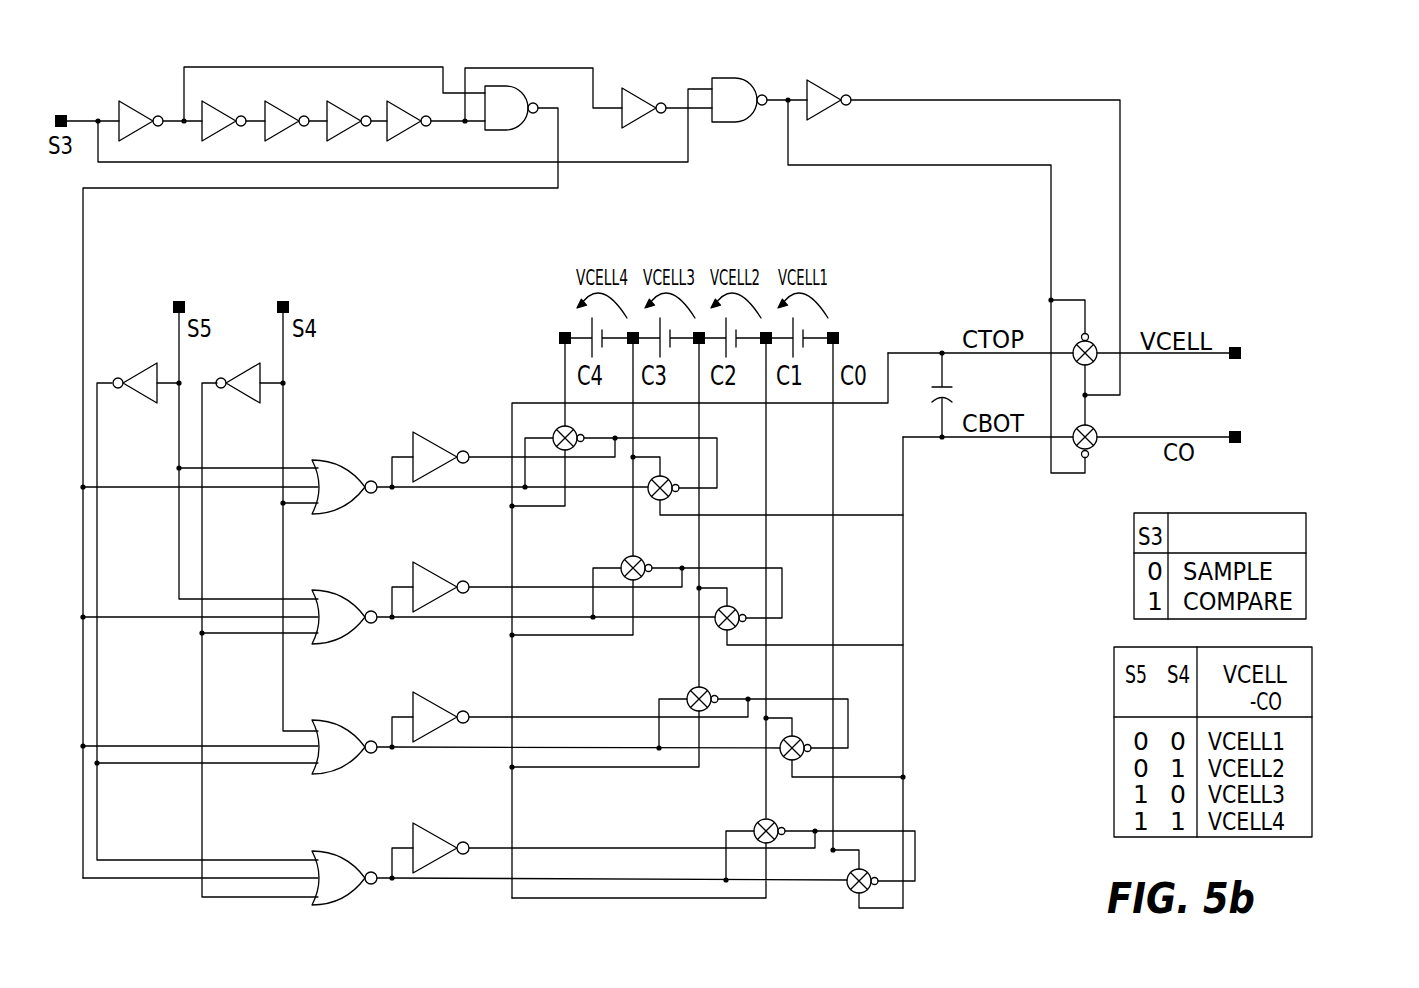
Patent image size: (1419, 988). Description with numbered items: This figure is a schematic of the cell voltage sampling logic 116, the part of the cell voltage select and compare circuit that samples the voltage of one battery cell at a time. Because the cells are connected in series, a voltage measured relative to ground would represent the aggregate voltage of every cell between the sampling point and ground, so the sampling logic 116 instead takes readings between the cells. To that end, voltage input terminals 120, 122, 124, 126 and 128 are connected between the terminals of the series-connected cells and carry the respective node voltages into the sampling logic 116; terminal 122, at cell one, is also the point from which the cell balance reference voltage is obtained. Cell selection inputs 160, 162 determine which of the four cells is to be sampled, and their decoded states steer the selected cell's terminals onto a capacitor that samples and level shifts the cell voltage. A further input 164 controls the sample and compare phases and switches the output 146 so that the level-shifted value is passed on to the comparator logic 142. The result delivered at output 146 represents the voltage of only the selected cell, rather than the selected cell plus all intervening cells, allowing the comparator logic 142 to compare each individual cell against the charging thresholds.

The input 164 is at (61, 114).
The cell selection input 162 is at (176, 300).
The cell selection input 160 is at (281, 300).
The voltage input terminal 128 is at (560, 345).
The voltage input terminal 126 is at (633, 331).
The voltage input terminal 124 is at (699, 331).
The voltage input terminal 122 is at (766, 331).
The voltage input terminal 120 is at (839, 336).
The output 146 is at (1230, 362).
The comparator logic 142 is at (1321, 327).
The cell voltage sampling logic 116 is at (970, 736).